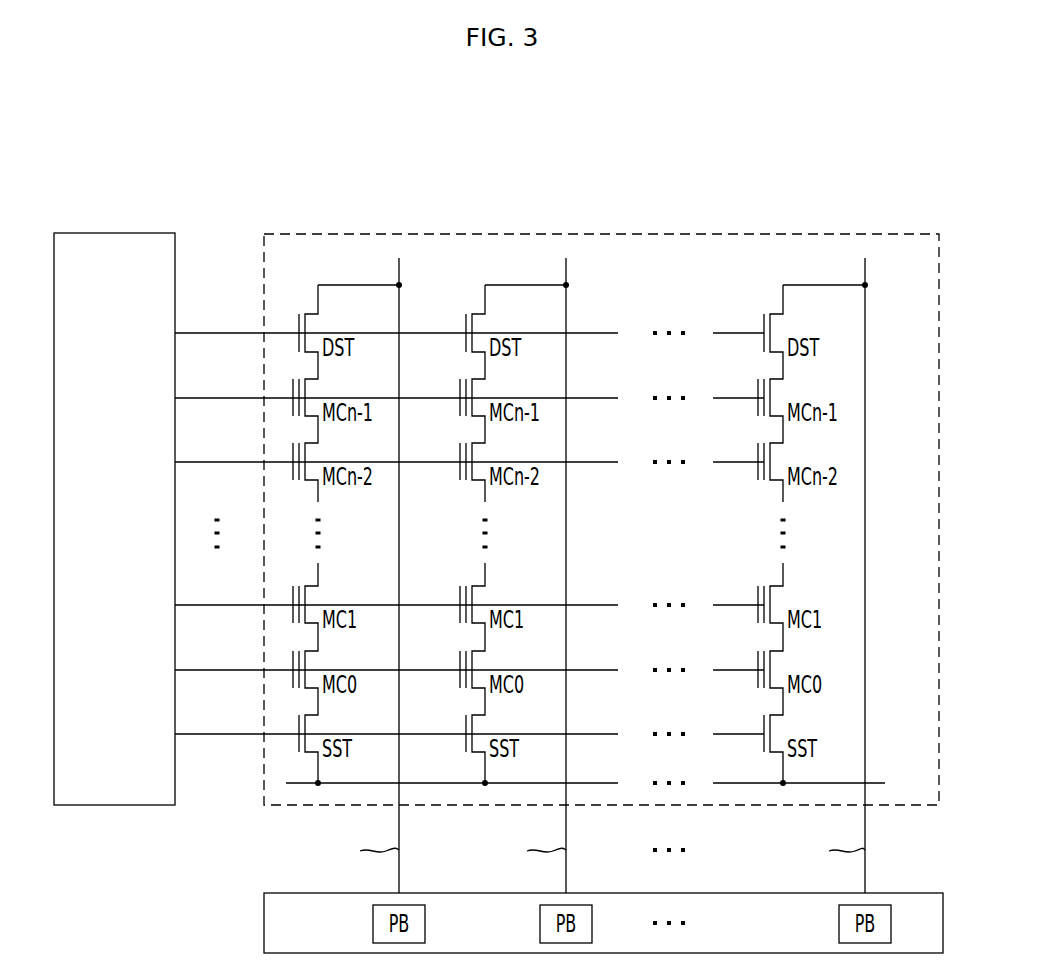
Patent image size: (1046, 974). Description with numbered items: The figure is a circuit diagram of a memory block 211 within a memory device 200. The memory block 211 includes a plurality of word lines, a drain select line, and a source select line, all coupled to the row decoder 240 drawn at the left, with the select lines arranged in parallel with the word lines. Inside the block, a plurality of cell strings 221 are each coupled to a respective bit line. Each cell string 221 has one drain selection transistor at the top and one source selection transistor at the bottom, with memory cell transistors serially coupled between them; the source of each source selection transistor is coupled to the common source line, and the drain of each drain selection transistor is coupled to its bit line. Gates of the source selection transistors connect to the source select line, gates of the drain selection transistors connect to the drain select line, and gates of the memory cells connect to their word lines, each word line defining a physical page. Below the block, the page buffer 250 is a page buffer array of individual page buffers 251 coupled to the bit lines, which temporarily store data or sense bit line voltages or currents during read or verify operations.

The memory device 200 is at (912, 137).
The memory block 211 is at (828, 234).
The cell string 221 is at (307, 278).
The row decoder 240 is at (115, 233).
The page buffer 250 is at (264, 923).
The page buffer 251 is at (372, 924).